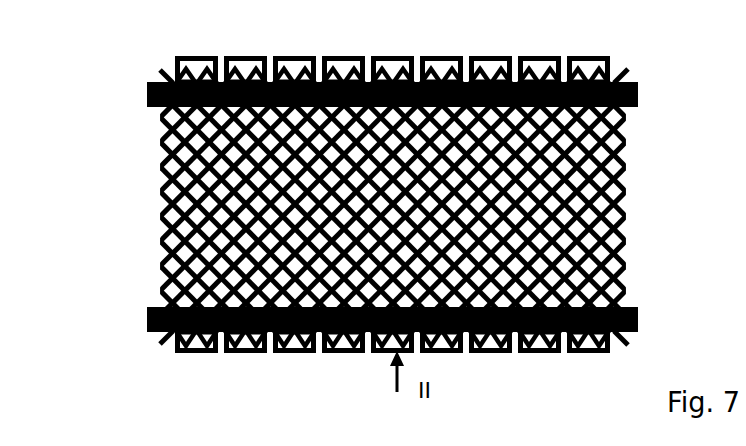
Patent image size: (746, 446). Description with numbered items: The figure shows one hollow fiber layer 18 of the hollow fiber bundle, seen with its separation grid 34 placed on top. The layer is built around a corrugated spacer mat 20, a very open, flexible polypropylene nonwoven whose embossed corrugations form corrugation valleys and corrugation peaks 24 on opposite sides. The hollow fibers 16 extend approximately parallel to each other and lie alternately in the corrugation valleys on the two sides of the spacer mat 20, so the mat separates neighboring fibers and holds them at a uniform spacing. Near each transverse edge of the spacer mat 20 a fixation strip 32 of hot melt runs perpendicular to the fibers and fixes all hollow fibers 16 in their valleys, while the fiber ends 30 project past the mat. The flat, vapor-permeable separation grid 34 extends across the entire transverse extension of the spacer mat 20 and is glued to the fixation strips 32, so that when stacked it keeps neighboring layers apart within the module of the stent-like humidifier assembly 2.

The stent 2 is at (373, 206).
The hollow fiber layer 18 is at (152, 60).
The spacer mat 20 is at (232, 179).
The corrugation peak 24 is at (240, 272).
The fixation strip 32 is at (638, 95).
The separation grid 34 is at (627, 172).
The hollow fiber 16 is at (391, 58).
The fiber end 30 is at (242, 58).